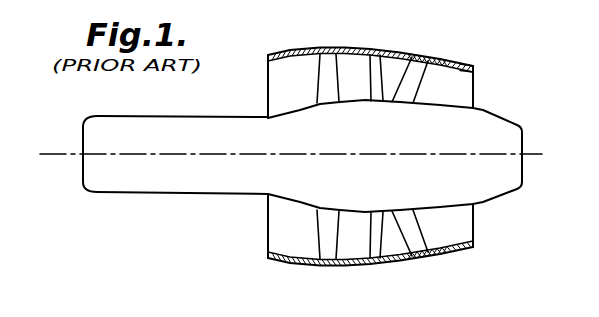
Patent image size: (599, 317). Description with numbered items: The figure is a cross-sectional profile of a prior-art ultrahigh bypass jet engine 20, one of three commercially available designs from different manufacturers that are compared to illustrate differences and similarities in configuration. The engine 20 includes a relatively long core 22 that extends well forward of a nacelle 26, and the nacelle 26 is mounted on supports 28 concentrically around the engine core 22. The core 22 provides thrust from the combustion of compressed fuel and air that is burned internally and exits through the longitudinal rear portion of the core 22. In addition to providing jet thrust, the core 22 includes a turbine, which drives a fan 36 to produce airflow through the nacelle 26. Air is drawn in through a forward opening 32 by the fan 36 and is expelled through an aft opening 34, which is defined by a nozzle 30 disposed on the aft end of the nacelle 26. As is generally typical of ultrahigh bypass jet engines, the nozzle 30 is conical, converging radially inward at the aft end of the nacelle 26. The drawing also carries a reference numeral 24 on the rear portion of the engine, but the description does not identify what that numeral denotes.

The ultrahigh bypass engine 20 is at (198, 213).
The core 22 is at (102, 193).
The hub 24 is at (510, 115).
The nacelle 26 is at (358, 49).
The supports 28 is at (428, 73).
The nozzle 30 is at (463, 67).
The forward opening 32 is at (282, 80).
The aft opening 34 is at (465, 95).
The fan 36 is at (323, 70).